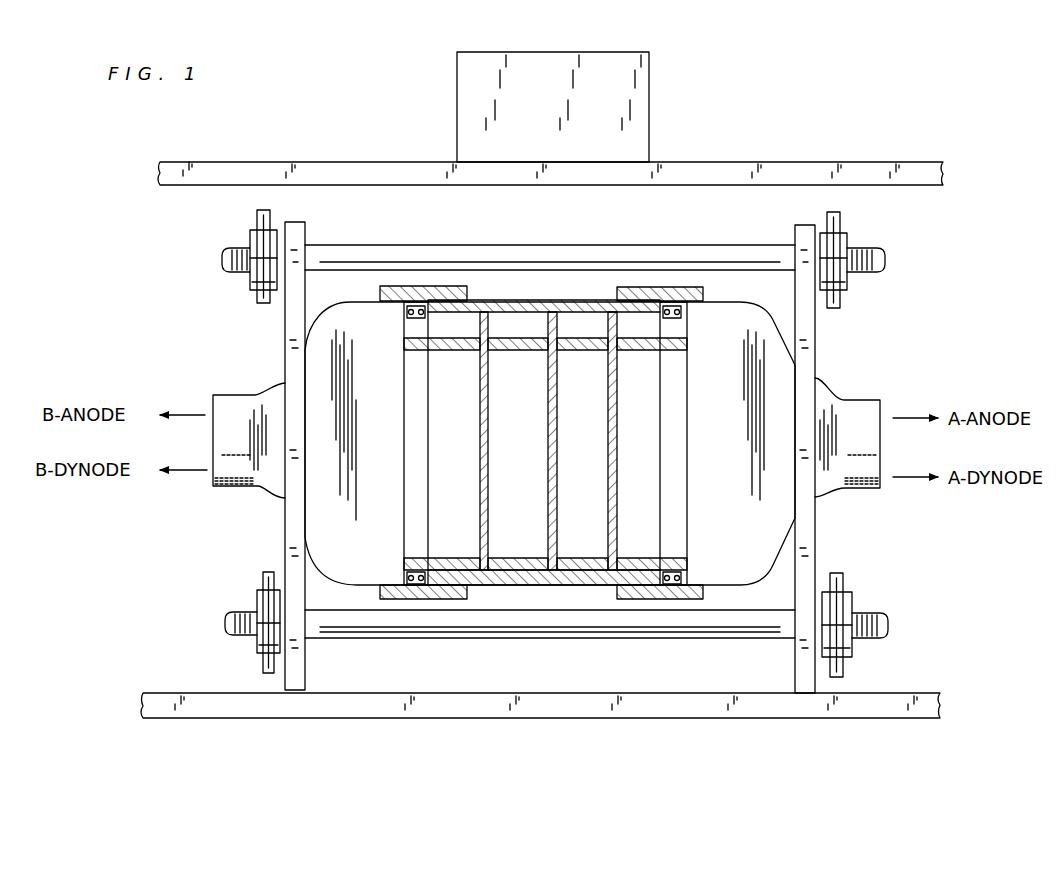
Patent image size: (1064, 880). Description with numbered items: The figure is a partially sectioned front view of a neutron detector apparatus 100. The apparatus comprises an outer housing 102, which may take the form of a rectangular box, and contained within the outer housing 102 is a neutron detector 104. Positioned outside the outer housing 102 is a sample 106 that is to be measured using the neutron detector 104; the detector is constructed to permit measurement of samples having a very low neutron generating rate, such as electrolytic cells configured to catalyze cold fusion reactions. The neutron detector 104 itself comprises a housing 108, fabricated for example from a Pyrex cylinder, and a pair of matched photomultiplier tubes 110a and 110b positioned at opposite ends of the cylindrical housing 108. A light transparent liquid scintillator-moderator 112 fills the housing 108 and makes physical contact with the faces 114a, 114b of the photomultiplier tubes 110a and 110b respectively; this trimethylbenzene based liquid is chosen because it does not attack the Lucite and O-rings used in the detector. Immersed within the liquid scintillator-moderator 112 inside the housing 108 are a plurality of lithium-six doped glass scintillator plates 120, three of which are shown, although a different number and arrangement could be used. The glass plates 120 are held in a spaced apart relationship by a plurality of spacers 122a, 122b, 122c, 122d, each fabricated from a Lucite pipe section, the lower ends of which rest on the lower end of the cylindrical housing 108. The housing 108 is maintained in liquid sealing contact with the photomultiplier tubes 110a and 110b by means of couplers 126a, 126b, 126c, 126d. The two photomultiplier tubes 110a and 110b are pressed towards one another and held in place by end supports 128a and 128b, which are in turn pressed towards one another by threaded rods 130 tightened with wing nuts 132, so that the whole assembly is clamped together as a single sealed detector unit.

The neutron detector apparatus 100 is at (994, 261).
The outer housing 102 is at (862, 162).
The neutron detector 104 is at (909, 383).
The sample 106 is at (649, 92).
The housing 108 is at (553, 300).
The photomultiplier tube 110a is at (815, 386).
The photomultiplier tube 110b is at (285, 392).
The liquid scintillator-moderator 112 is at (468, 509).
The face of photomultiplier tube 114a is at (687, 442).
The face of photomultiplier tube 114b is at (404, 456).
The Li-6 doped glass scintillator plates 120 is at (488, 448).
The spacer 122a is at (453, 350).
The spacer 122b is at (516, 350).
The spacer 122c is at (579, 350).
The spacer 122d is at (634, 350).
The coupler 126a is at (690, 287).
The coupler 126b is at (455, 286).
The coupler 126c is at (430, 600).
The coupler 126d is at (668, 600).
The end support 128a is at (797, 240).
The end support 128b is at (305, 242).
The threaded rods 130 is at (550, 246).
The wing nuts 132 is at (250, 232).